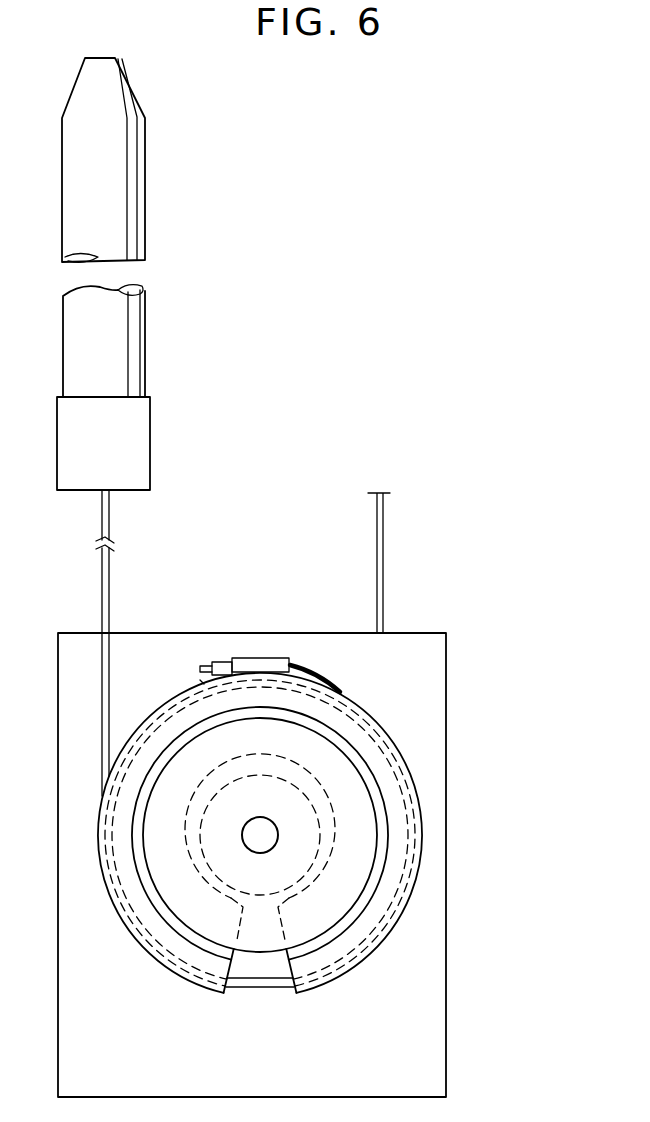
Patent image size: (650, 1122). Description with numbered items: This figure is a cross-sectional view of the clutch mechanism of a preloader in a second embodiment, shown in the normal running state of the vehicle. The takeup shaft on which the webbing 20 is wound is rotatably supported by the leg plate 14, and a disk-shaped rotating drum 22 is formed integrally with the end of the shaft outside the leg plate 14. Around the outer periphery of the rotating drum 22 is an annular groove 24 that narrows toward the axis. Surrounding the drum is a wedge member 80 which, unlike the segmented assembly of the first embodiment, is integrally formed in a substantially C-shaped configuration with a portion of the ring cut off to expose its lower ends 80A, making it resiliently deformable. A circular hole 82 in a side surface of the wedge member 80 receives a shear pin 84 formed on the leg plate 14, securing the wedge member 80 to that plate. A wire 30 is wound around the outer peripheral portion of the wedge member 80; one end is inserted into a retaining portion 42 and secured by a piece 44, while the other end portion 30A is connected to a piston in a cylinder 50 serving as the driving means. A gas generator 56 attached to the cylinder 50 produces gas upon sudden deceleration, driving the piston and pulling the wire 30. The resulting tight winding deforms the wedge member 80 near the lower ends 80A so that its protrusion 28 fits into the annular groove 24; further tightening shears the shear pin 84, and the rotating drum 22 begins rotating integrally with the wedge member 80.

The leg plate 14 is at (446, 698).
The webbing 20 is at (384, 540).
The rotating drum 22 is at (367, 883).
The annular groove 24 is at (258, 775).
The protrusion 28 is at (328, 806).
The wire 30 is at (109, 590).
The other end portion of the wire 30A is at (109, 514).
The retaining portion 42 is at (262, 658).
The piece 44 is at (232, 662).
The cylinder 50 is at (147, 333).
The gas generator 56 is at (148, 452).
The wedge member 80 is at (423, 835).
The lower ends 80A is at (234, 968).
The circular hole 82 is at (200, 680).
The shear pin 84 is at (330, 668).